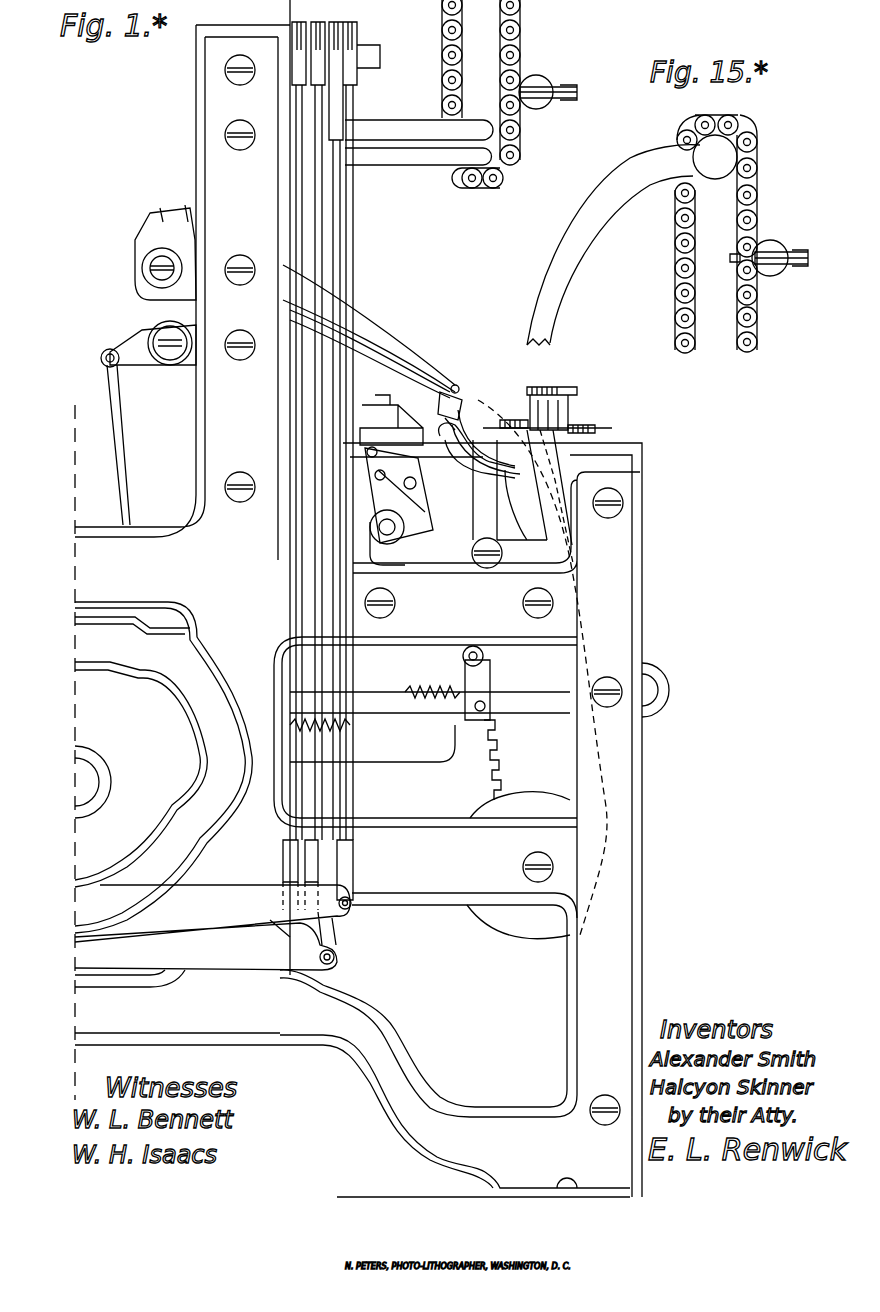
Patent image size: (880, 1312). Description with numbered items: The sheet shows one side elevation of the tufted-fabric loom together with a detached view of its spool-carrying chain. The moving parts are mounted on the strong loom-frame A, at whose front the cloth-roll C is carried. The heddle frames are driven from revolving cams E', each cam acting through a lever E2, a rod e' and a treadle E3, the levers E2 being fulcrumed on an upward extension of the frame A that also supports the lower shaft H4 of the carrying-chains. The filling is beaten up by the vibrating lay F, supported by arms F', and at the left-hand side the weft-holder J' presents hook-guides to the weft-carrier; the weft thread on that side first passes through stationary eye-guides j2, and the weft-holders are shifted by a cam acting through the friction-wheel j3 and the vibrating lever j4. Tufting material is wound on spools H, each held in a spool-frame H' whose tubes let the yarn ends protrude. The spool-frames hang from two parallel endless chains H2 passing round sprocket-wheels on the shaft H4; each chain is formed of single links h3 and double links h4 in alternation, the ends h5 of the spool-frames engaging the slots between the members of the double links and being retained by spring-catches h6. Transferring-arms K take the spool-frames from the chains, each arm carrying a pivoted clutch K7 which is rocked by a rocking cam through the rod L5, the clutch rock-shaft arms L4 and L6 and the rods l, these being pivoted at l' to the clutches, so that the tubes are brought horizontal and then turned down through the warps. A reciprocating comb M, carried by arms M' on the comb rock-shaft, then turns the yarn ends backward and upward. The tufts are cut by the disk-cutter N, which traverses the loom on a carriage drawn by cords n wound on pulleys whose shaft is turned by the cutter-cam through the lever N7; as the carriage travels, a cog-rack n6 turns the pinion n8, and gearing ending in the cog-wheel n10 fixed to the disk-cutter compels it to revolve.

The loom-frame A is at (358, 598).
The cloth-roll C is at (682, 690).
The revolving cam E' is at (163, 767).
The heddle-lever E2 is at (336, 64).
The treadle E3 is at (213, 927).
The rod e' is at (319, 466).
The vibrating lay F is at (396, 469).
The lay arm F' is at (395, 537).
The spool of tufting material H is at (536, 81).
In FIG. 15, the spool of tufting material H is at (759, 245).
The spool-frame H' is at (552, 81).
In FIG. 15, the endless carrying-chain H2 is at (656, 240).
The lower chain shaft H4 is at (445, 142).
The single link h3 is at (522, 14).
In FIG. 15, the single link h3 is at (760, 328).
The double link h4 is at (522, 42).
In FIG. 15, the double link h4 is at (760, 306).
The spool-frame end h5 is at (553, 108).
In FIG. 15, the spool-frame end h5 is at (785, 275).
In FIG. 15, the spring-catch h6 is at (812, 258).
The weft-holder J' is at (482, 457).
The stationary eye-guide j2 is at (407, 455).
The friction-wheel j3 is at (372, 480).
The vibrating lever j4 is at (416, 484).
The transferring-arm K is at (369, 328).
The clutch K7 is at (446, 378).
The clutch rock-shaft arm L4 is at (148, 344).
The rod L5 is at (124, 445).
The clutch rock-shaft arm L6 is at (160, 315).
The rod l is at (370, 354).
The pivot l' is at (439, 343).
The reciprocating comb M is at (477, 457).
The comb arm M' is at (515, 499).
The disk-cutter N is at (620, 415).
The lever N7 is at (430, 792).
The carriage cord n is at (542, 667).
The cog-rack n6 is at (580, 392).
The pinion n8 is at (552, 397).
The cog-wheel n10 is at (550, 418).